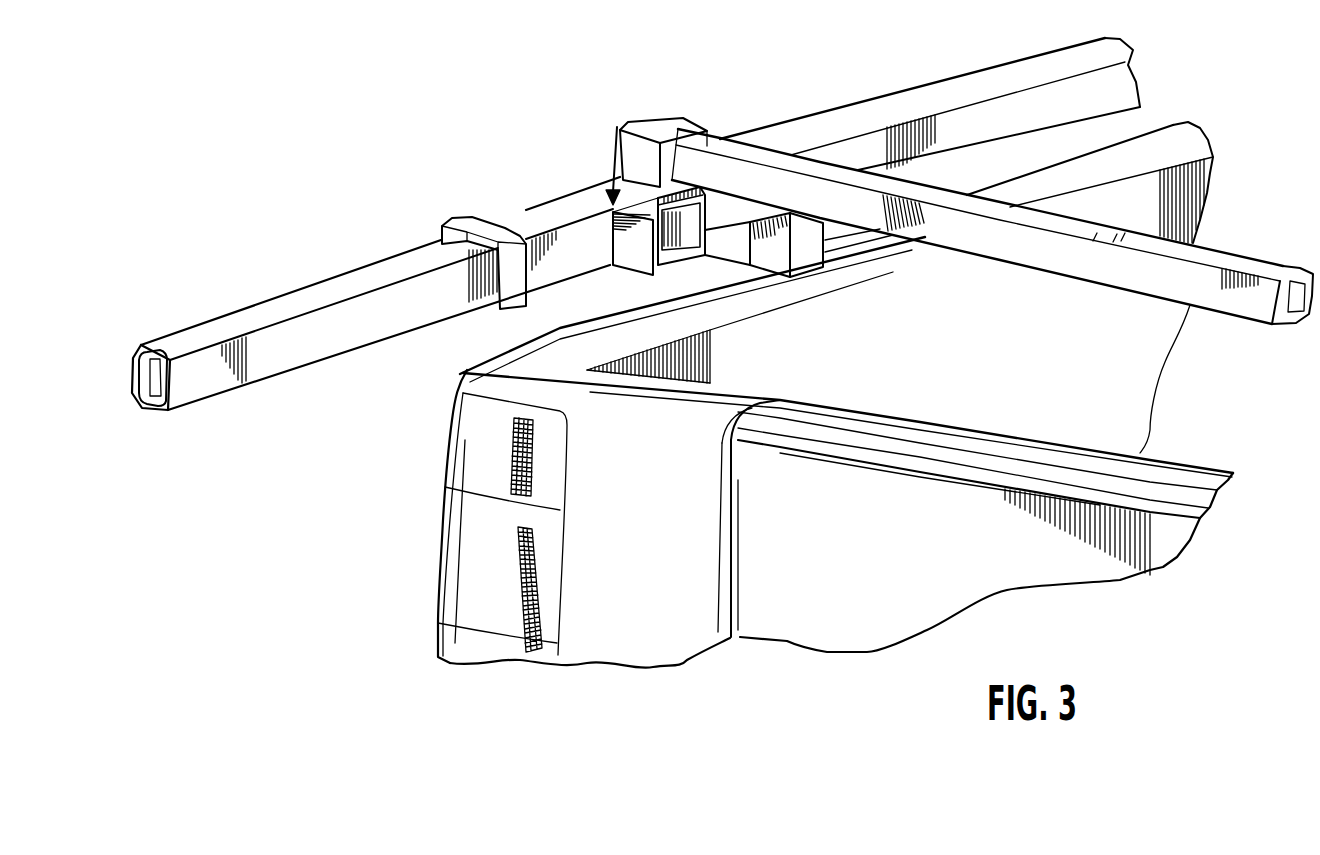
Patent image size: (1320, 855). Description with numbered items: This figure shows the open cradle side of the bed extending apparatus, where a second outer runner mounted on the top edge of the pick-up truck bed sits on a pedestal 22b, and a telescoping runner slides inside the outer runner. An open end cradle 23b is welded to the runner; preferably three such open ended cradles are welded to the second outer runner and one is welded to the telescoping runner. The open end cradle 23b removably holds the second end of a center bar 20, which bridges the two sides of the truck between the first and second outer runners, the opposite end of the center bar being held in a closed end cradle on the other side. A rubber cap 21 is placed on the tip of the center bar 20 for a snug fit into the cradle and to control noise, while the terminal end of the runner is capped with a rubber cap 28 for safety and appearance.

The center bar 20 is at (1074, 267).
The rubber cap 21 is at (663, 131).
The rear pedestal 22b is at (803, 257).
The open end cradle 23b is at (637, 254).
The rubber cap 28 is at (493, 222).